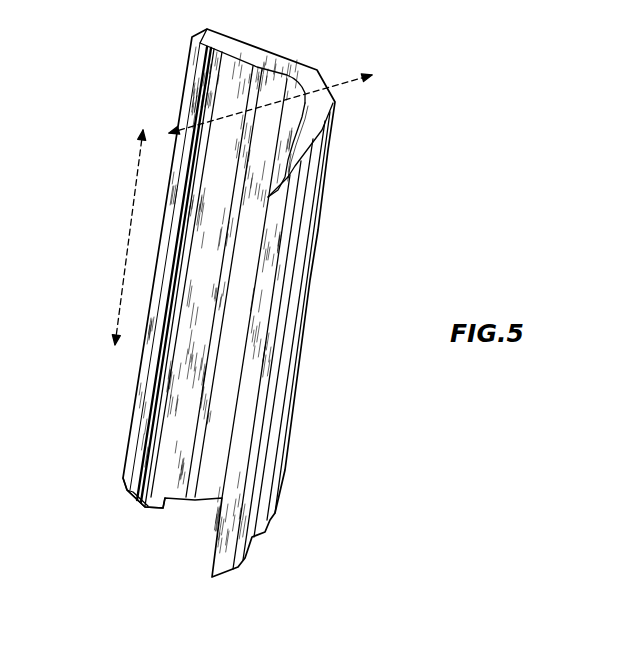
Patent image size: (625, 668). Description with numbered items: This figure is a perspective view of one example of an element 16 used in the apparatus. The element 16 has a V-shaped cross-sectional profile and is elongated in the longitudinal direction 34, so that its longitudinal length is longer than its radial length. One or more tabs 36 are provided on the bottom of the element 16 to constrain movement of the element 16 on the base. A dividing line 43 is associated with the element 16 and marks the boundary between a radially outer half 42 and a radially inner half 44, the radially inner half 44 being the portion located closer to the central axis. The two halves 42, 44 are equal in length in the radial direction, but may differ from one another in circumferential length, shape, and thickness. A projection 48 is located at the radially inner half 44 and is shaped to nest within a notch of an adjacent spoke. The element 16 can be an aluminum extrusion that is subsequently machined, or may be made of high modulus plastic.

The element 16 is at (118, 78).
The longitudinal direction 34 is at (127, 240).
The tab 36 is at (155, 512).
The radially outer half 42 is at (233, 50).
The dividing line 43 is at (340, 82).
The radially inner half 44 is at (298, 150).
The projection 48 is at (270, 196).